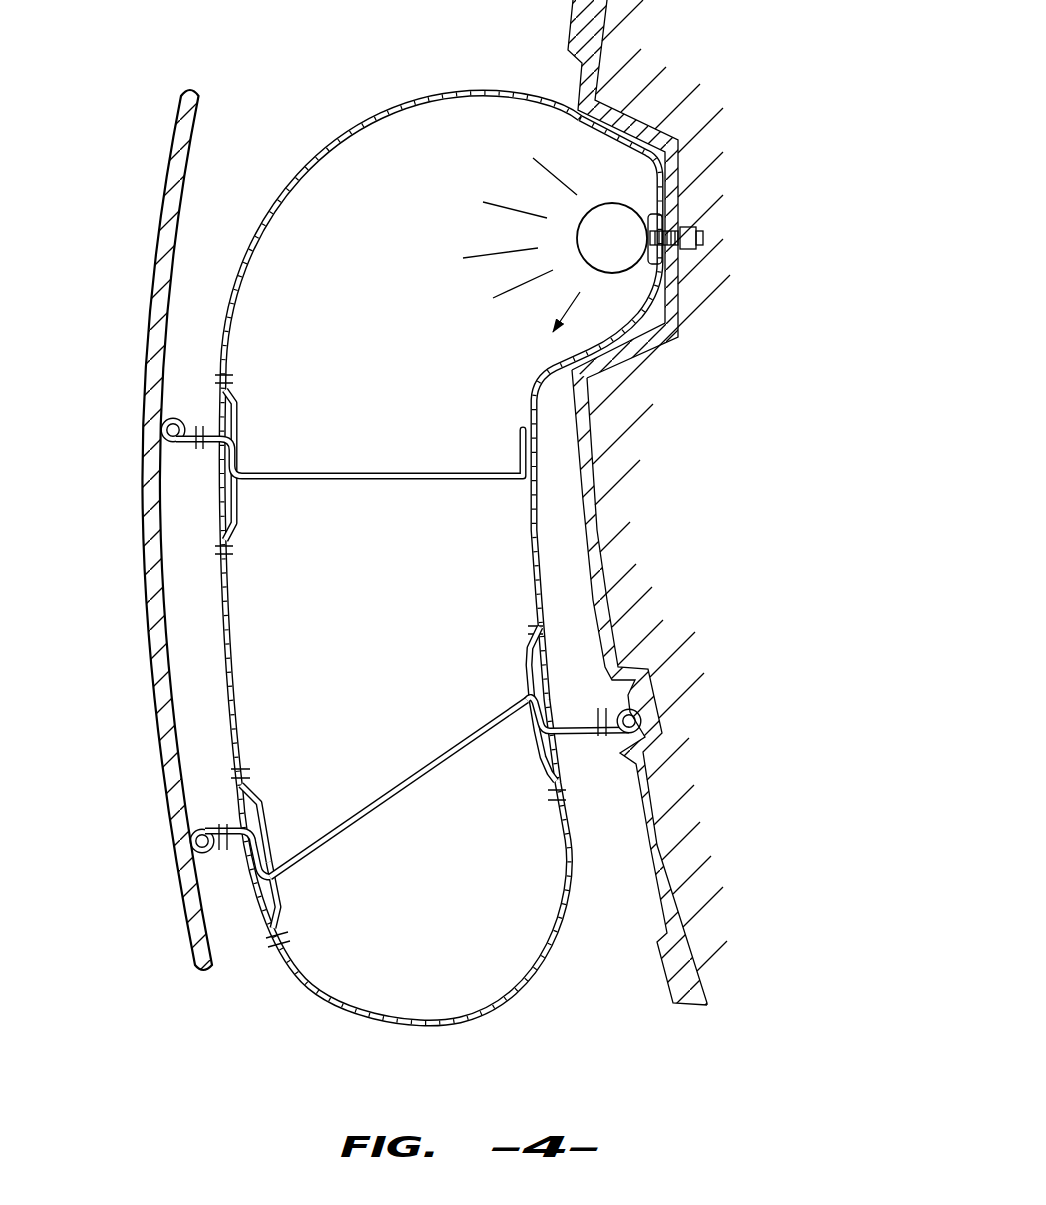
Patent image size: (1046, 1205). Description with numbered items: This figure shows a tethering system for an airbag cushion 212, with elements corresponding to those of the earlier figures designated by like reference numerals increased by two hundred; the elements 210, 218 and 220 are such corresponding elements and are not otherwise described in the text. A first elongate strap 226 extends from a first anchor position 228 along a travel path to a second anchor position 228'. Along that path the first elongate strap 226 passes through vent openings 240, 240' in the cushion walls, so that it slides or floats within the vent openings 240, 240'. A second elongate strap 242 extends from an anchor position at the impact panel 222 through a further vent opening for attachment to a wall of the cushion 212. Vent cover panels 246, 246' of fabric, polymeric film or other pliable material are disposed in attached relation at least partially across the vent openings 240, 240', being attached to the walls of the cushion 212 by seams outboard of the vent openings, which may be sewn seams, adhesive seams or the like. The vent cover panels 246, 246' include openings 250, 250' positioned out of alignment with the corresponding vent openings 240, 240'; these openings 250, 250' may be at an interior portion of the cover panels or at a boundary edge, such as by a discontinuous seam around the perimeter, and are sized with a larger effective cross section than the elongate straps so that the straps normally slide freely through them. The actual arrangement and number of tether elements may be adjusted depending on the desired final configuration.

The upper mounting wall 210 is at (651, 124).
The cushion 212 is at (436, 97).
The lower mounting wall 218 is at (650, 888).
The lamp bulb 220 is at (637, 270).
The impact panel 222 is at (173, 897).
The first elongate strap 226 is at (437, 762).
The first anchor position 228 is at (691, 674).
The second anchor position 228' is at (157, 853).
The vent opening 240 is at (579, 764).
The vent opening 240' is at (177, 811).
The second elongate strap 242 is at (480, 470).
The vent cover panel 246 is at (520, 751).
The vent cover panel 246' is at (287, 818).
The opening 250 is at (501, 663).
The opening 250' is at (318, 901).